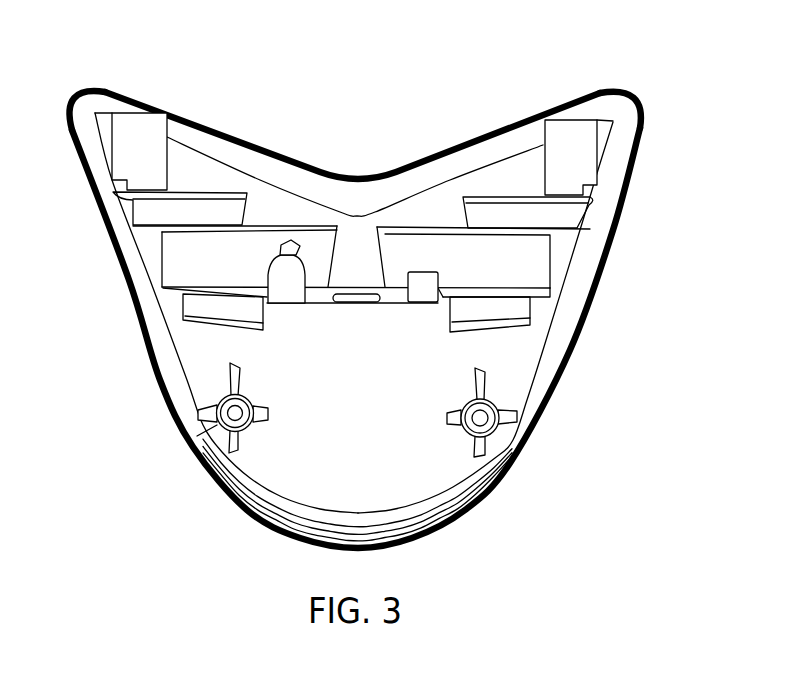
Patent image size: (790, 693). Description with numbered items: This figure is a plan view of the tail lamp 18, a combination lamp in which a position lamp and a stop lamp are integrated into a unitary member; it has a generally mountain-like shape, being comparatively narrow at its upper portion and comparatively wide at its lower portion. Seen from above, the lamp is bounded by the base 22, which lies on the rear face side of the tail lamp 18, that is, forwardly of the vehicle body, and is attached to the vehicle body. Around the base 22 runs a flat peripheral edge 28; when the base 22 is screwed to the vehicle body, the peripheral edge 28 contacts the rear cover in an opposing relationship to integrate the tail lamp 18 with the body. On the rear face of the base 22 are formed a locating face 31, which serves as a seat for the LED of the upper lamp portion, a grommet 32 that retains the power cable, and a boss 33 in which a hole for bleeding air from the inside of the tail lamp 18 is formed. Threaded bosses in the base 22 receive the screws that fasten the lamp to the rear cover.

The tail lamp 18 is at (572, 387).
The base 22 is at (298, 473).
The peripheral edge 28 is at (586, 275).
The locating face 31 is at (360, 294).
The grommet 32 is at (301, 262).
The boss 33 is at (425, 283).